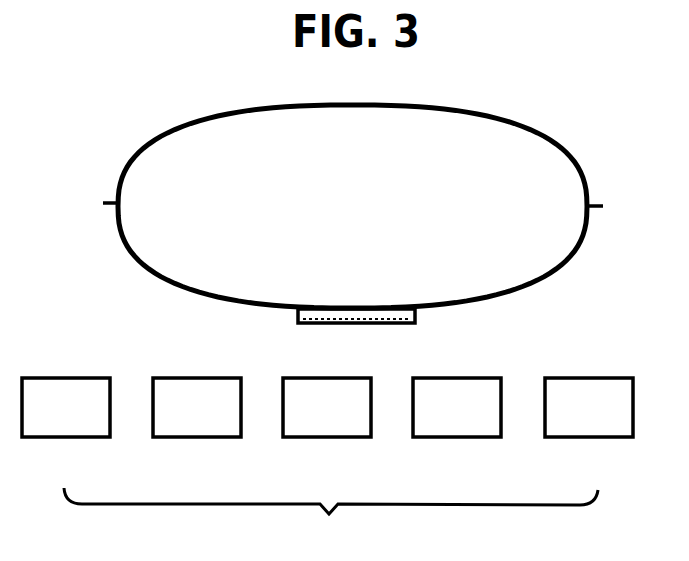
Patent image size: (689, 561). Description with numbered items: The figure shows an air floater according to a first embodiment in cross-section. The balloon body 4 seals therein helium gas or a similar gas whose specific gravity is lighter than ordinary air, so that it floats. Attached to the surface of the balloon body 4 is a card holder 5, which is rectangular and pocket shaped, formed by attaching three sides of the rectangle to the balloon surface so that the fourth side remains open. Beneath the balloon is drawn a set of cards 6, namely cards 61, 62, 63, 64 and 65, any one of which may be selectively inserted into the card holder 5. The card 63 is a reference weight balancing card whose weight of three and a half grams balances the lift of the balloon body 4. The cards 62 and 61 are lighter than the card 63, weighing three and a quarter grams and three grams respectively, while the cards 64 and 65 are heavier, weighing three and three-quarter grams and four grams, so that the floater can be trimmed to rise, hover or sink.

The balloon body 4 is at (527, 128).
The card holder 5 is at (415, 316).
The cards 6 is at (331, 518).
The card 61 is at (66, 428).
The card 62 is at (197, 428).
The reference weight balancing card 63 is at (327, 428).
The card 64 is at (457, 428).
The card 65 is at (589, 428).